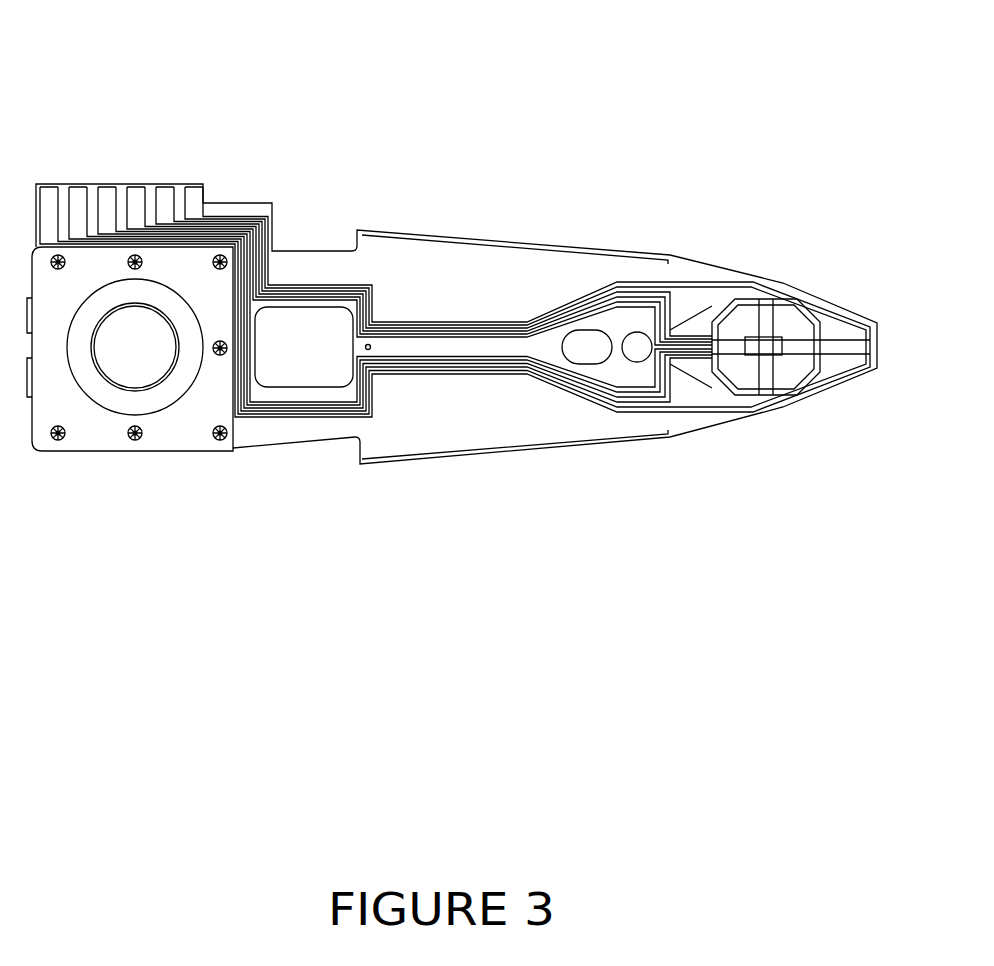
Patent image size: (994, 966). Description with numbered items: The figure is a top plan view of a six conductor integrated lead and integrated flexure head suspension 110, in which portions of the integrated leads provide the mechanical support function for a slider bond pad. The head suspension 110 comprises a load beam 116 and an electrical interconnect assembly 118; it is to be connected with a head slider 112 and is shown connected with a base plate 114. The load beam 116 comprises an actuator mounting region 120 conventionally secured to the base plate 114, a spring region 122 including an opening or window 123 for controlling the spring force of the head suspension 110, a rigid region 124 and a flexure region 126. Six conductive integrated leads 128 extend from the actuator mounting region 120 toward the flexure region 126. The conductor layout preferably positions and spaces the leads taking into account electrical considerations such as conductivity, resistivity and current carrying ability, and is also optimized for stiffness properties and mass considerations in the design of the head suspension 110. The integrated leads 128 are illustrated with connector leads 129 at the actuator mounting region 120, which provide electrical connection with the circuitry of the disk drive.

The head suspension 110 is at (418, 200).
The head slider 112 is at (777, 332).
The base plate 114 is at (107, 388).
The load beam 116 is at (462, 257).
The electrical interconnect assembly 118 is at (488, 322).
The actuator mounting region 120 is at (172, 438).
The spring region 122 is at (312, 430).
The opening or window 123 is at (277, 305).
The rigid region 124 is at (528, 425).
The flexure region 126 is at (758, 428).
The conductive integrated leads 128 is at (455, 295).
The connector leads 129 is at (192, 192).